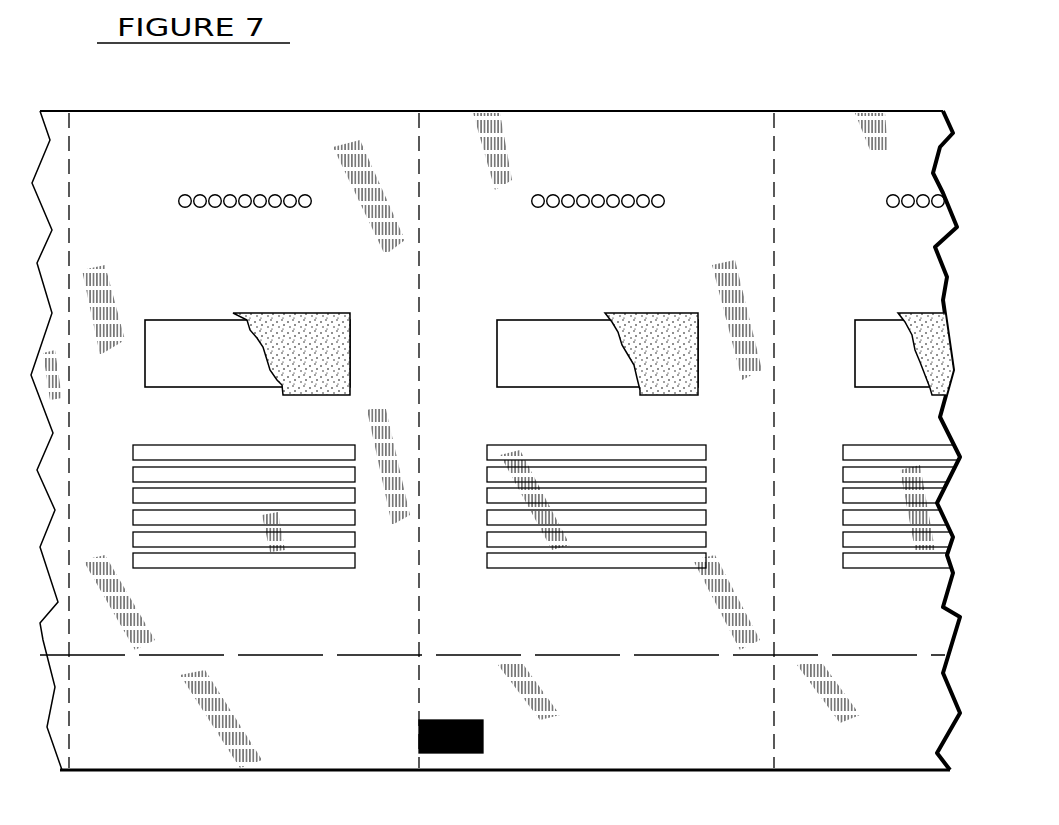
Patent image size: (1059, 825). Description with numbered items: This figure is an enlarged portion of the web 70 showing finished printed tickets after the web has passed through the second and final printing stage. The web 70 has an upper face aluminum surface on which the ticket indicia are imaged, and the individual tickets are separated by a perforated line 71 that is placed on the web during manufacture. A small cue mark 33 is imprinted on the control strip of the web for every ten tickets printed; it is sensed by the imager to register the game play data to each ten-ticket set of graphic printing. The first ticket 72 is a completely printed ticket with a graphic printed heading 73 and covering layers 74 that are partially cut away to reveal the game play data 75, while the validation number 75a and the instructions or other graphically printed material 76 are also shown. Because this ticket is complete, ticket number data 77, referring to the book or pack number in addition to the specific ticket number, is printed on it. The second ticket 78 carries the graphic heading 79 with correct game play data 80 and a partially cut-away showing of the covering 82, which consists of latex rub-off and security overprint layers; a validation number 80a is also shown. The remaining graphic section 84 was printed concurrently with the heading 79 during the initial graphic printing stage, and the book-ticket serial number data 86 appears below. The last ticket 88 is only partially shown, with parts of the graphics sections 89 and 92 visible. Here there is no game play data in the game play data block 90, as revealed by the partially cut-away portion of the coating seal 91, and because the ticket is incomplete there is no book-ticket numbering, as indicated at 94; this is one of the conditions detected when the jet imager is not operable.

The web 70 is at (370, 102).
The perforated line 71 is at (69, 187).
The first ticket 72 is at (135, 133).
The graphic printed heading 73 is at (172, 178).
The covering layers 74 is at (315, 320).
The game play data 75 is at (175, 330).
The validation number 75a is at (186, 588).
The instructions 76 is at (137, 453).
The ticket number data 77 is at (322, 621).
The second ticket 78 is at (707, 135).
The graphic heading 79 is at (526, 178).
The game play data 80 is at (520, 330).
The validation code 80a is at (545, 588).
The covering 82 is at (666, 320).
The graphic section 84 is at (490, 453).
The book-ticket data 86 is at (530, 620).
The last ticket 88 is at (840, 138).
The graphics section 89 is at (878, 178).
The game play data block 90 is at (875, 330).
The coating seal 91 is at (930, 320).
The graphics section 92 is at (848, 455).
The absence of book-ticket numbering 94 is at (860, 618).
The cue mark 33 is at (420, 740).